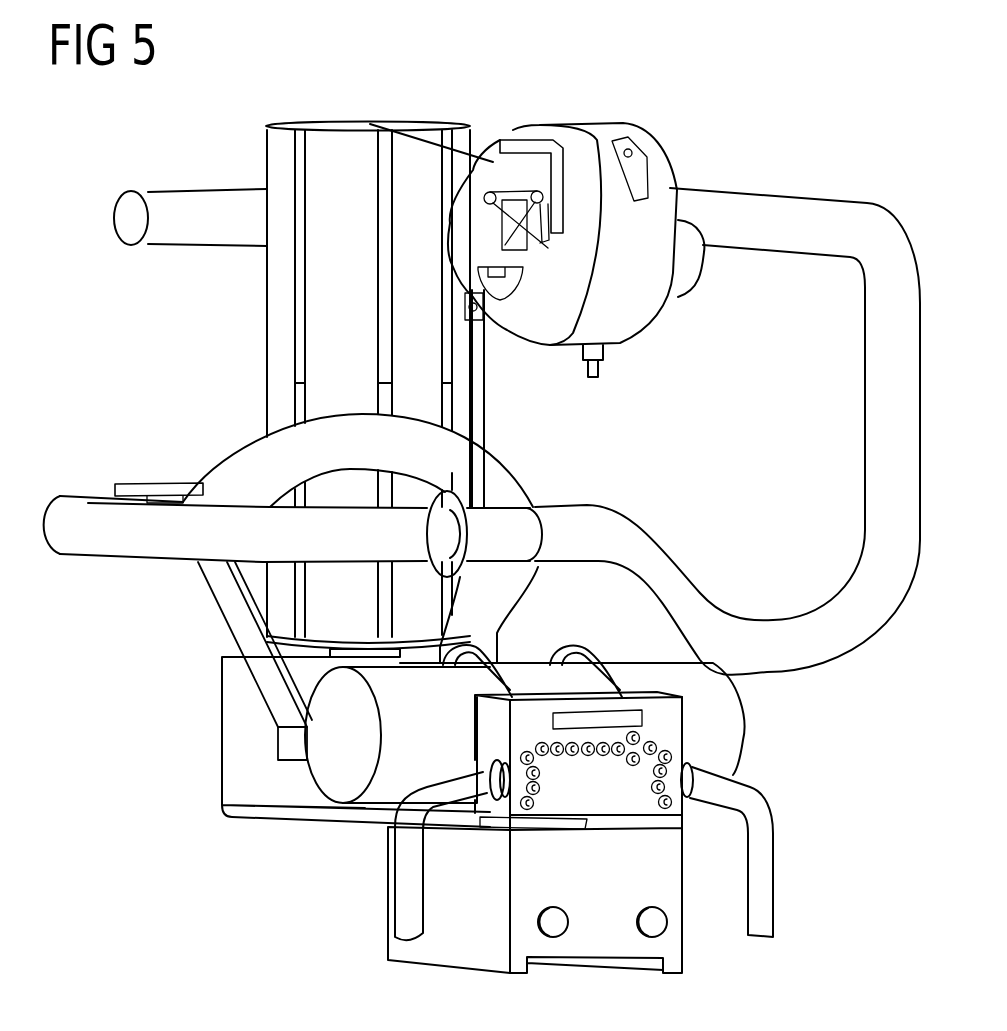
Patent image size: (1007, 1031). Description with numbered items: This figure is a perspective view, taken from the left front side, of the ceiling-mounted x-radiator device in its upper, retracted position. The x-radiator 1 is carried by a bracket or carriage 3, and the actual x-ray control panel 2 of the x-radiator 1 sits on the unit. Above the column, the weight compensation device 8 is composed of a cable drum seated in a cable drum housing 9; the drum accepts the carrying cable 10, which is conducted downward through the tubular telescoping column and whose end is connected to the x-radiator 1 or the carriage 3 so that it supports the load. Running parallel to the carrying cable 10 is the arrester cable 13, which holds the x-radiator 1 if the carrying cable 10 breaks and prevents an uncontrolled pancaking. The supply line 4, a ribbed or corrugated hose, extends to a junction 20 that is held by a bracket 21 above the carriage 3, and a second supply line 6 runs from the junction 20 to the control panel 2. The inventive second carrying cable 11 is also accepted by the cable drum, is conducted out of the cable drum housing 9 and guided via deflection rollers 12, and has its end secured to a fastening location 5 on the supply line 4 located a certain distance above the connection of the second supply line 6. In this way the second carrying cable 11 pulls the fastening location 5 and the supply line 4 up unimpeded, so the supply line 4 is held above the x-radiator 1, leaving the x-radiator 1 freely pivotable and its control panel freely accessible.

The x-radiator 1 is at (333, 768).
The x-ray control panel 2 is at (613, 793).
The bracket or carriage 3 is at (243, 733).
The supply line 4 is at (880, 432).
The fastening location 5 is at (517, 494).
The second supply line 6 is at (490, 643).
The weight compensation device 8 is at (599, 212).
The cable drum housing 9 is at (637, 297).
The carrying cable 10 is at (480, 157).
The second carrying cable 11 is at (483, 383).
The deflection rollers 12 is at (548, 250).
The arrester cable 13 is at (442, 127).
The junction 20 is at (158, 480).
The bracket 21 is at (227, 600).